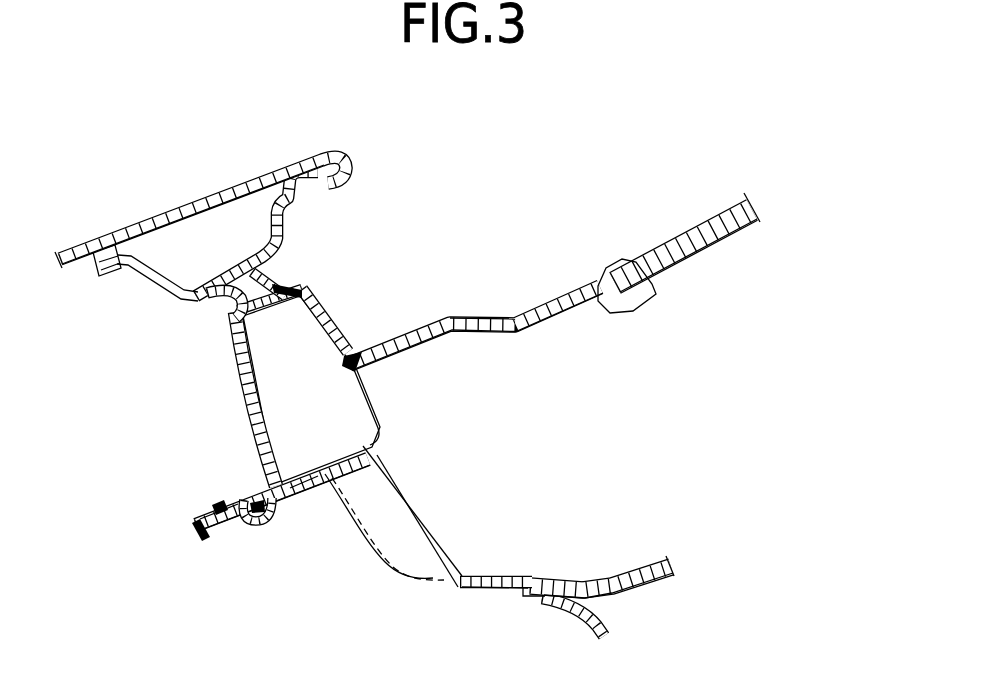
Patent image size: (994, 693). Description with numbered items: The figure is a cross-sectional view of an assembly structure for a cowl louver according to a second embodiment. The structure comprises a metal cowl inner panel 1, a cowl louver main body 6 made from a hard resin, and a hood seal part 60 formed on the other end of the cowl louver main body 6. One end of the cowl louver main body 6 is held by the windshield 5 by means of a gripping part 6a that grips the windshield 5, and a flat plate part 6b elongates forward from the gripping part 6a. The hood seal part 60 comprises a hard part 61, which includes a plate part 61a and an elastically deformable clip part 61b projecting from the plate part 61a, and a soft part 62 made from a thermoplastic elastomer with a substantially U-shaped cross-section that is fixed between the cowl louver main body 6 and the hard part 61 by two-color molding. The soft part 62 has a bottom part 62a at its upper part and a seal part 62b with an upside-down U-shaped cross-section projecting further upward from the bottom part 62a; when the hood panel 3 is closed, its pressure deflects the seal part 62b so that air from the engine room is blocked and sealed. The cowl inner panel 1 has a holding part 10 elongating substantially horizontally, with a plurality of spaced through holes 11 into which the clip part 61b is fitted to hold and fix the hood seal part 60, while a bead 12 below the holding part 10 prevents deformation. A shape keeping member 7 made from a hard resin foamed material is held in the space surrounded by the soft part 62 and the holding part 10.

The cowl inner panel 1 is at (435, 538).
The hood panel 3 is at (205, 200).
The windshield 5 is at (690, 263).
The cowl louver main body 6 is at (472, 334).
The gripping part 6a is at (630, 310).
The flat portion 6b is at (514, 320).
The shape keeping member 7 is at (368, 424).
The holding part 10 is at (302, 488).
The through holes 11 is at (263, 515).
The bead 12 is at (410, 565).
The hood seal part 60 is at (259, 375).
The hard part 61 is at (241, 512).
The plate part 61a is at (205, 498).
The clip part 61b is at (270, 517).
The soft part 62 is at (259, 329).
The bottom part 62a is at (228, 306).
The seal part 62b is at (274, 283).